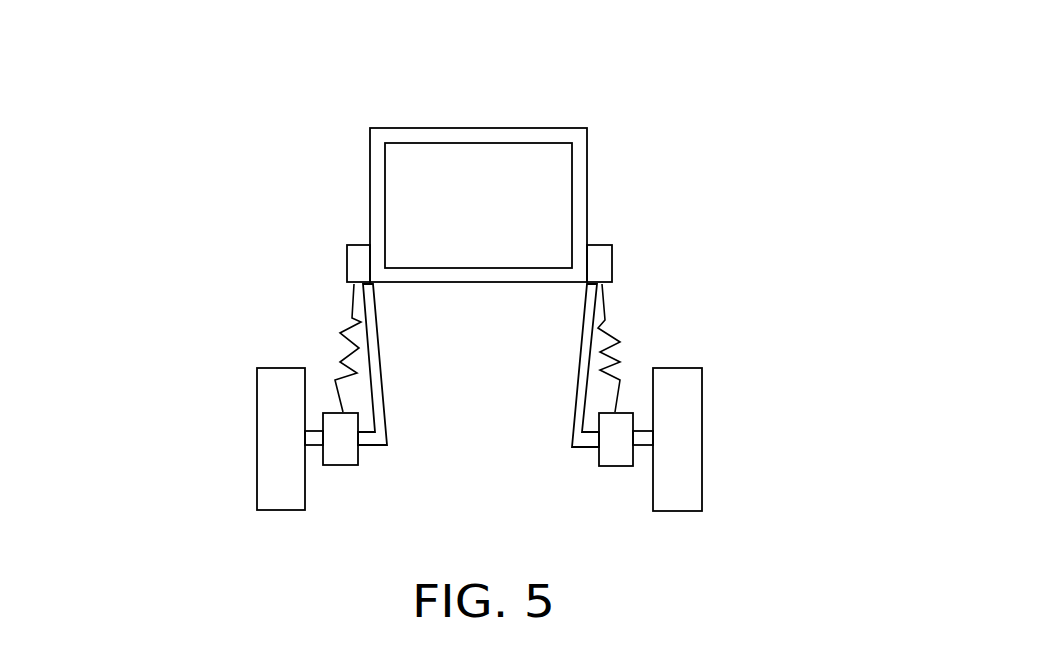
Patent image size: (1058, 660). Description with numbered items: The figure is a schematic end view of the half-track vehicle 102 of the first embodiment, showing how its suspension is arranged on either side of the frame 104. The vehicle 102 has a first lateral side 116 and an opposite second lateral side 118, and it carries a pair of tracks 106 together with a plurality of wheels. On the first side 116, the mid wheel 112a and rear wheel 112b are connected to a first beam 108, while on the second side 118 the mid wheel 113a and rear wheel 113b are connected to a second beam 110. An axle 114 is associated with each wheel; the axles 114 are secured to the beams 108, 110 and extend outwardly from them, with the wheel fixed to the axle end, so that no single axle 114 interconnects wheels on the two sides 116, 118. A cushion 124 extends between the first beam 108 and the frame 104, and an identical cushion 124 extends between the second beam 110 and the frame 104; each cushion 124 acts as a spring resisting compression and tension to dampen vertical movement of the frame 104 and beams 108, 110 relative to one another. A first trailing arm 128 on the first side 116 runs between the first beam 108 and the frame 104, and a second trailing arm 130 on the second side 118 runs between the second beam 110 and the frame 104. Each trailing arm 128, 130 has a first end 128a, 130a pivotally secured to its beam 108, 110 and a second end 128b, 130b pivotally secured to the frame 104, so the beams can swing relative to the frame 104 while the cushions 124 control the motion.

The half-track vehicle 102 is at (536, 144).
The frame 104 is at (588, 158).
The track 106 is at (481, 415).
The first beam 108 is at (347, 466).
The second beam 110 is at (617, 466).
The mid wheel 112a is at (186, 439).
The rear wheel 112b is at (257, 446).
The mid wheel 113a is at (774, 439).
The rear wheel 113b is at (702, 435).
The axle 114 is at (313, 449).
The first lateral side 116 is at (343, 338).
The second lateral side 118 is at (631, 357).
The cushion 124 is at (345, 330).
The first trailing arm 128 is at (425, 383).
The first end 128a is at (382, 446).
The second end 128b is at (374, 290).
The second trailing arm 130 is at (543, 396).
The first end 130a is at (586, 449).
The second end 130b is at (586, 291).